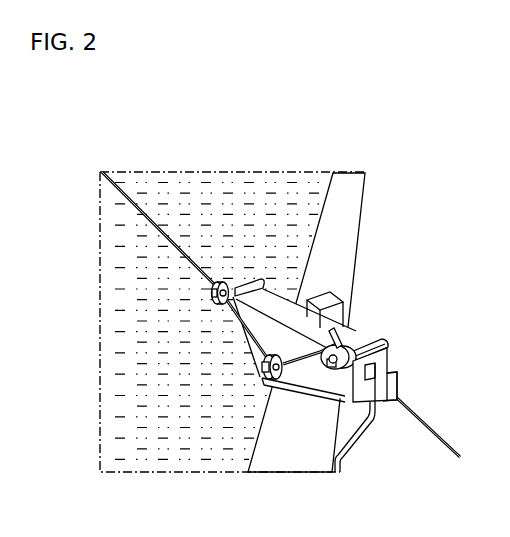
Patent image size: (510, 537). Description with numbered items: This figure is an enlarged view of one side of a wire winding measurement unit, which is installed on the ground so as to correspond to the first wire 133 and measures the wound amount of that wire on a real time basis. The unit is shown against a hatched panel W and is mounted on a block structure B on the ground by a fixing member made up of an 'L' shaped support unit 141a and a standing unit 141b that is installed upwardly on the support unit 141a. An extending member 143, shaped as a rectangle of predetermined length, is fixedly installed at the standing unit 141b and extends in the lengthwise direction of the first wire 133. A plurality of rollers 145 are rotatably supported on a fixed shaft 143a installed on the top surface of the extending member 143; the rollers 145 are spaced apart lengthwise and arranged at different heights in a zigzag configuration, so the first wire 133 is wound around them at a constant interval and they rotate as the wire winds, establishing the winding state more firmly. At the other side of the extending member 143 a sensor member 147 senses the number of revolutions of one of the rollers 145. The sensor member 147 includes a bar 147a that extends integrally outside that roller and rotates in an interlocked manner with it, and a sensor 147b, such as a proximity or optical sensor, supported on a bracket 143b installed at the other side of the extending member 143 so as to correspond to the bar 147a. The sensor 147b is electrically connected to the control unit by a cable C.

The wall panel W is at (115, 397).
The block structure B is at (357, 210).
The cable C is at (357, 441).
The first wire 133 is at (137, 207).
The support unit 141a is at (328, 389).
The standing unit 141b is at (332, 292).
The extending member 143 is at (405, 377).
The fixed shaft 143a is at (248, 281).
The bracket 143b is at (397, 385).
The rollers 145 is at (262, 367).
The sensor member 147 is at (397, 344).
The bar 147a is at (337, 332).
The sensor 147b is at (348, 347).